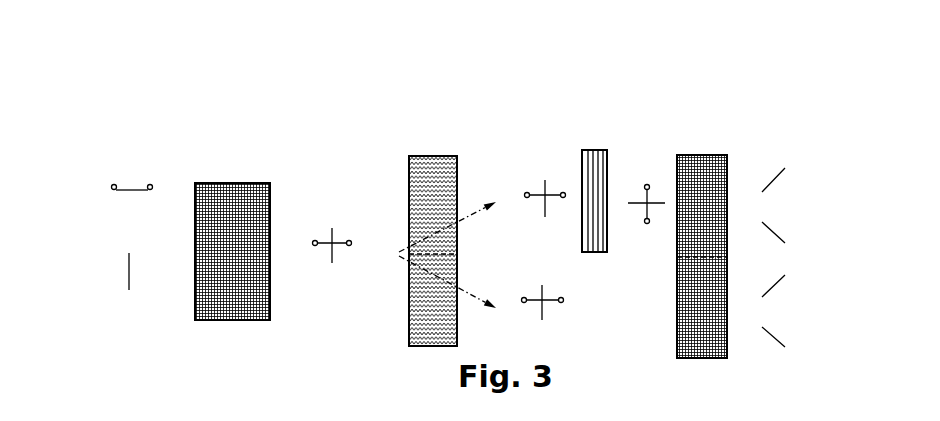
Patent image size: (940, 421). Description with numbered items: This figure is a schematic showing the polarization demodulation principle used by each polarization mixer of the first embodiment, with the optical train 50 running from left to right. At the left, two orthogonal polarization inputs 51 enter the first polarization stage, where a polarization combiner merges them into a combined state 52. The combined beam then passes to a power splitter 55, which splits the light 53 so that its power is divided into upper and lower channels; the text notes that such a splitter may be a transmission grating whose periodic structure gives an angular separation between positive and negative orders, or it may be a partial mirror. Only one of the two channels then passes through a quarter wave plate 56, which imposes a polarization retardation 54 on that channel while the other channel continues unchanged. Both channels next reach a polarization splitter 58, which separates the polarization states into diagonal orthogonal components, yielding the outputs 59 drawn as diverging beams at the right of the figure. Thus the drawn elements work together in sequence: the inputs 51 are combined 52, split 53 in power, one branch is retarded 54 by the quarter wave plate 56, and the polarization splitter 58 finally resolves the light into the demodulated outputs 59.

The optical system 50 is at (800, 95).
The orthogonal polarization inputs 51 is at (124, 324).
The combined polarization state 52 is at (327, 292).
The split beams 53 is at (521, 145).
The polarization retardation 54 is at (644, 136).
The power splitter 55 is at (423, 347).
The quarter wave plate 56 is at (593, 253).
The polarization splitter 58 is at (739, 93).
The outputs 59 is at (792, 153).